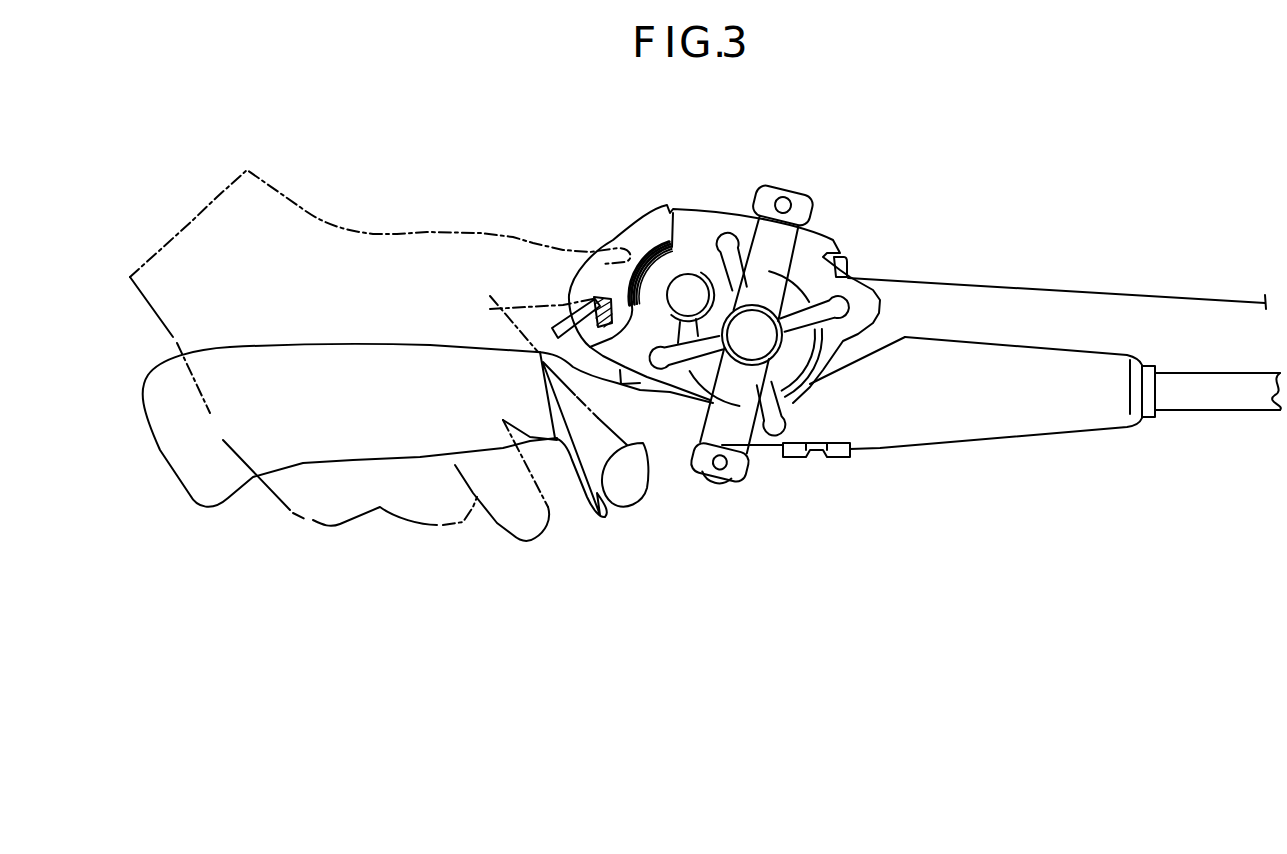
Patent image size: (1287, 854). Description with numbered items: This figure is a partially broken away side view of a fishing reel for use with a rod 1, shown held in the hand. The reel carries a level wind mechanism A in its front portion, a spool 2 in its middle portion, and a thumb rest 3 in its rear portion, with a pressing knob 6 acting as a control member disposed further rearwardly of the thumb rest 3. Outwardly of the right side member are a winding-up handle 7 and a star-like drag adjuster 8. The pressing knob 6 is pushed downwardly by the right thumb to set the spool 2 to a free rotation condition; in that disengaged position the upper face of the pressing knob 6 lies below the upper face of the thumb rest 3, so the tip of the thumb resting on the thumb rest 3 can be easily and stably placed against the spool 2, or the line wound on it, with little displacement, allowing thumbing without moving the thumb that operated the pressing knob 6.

The rod 1 is at (1213, 410).
The spool 2 is at (655, 243).
The thumb rest 3 is at (603, 297).
The pressing knob 6 is at (552, 328).
The winding-up handle 7 is at (810, 213).
The star-like drag adjuster 8 is at (730, 234).
The level wind mechanism A is at (855, 252).